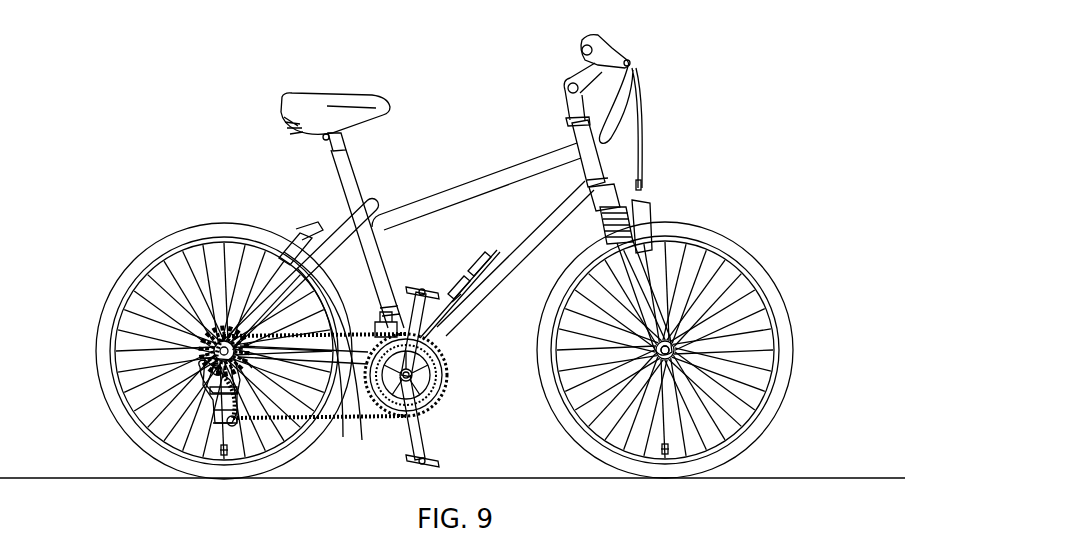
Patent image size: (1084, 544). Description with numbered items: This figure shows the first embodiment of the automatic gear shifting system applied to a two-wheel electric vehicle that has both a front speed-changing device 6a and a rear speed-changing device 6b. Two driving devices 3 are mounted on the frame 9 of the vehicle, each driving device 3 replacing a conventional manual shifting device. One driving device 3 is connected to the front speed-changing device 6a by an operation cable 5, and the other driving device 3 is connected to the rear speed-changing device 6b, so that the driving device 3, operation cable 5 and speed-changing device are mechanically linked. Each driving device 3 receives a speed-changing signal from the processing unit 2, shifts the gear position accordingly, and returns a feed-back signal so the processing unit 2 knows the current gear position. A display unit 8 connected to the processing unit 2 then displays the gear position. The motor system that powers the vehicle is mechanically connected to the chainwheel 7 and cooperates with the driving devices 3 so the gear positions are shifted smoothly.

The processing unit 2 is at (488, 252).
The driving device 3 is at (465, 275).
The operation cable 5 is at (458, 298).
The front speed-changing device 6a is at (365, 357).
The rear speed-changing device 6b is at (208, 392).
The chainwheel 7 is at (387, 413).
The display unit 8 is at (577, 43).
The frame 9 is at (543, 213).